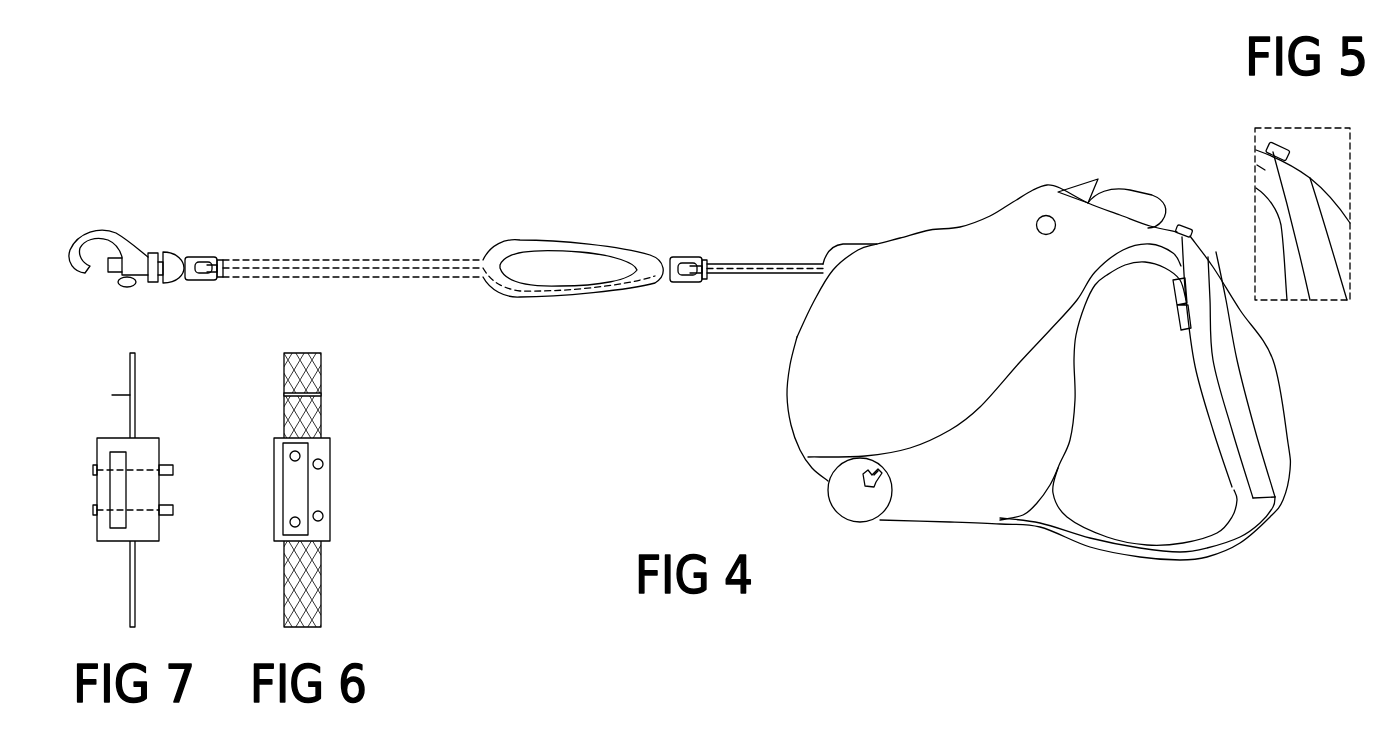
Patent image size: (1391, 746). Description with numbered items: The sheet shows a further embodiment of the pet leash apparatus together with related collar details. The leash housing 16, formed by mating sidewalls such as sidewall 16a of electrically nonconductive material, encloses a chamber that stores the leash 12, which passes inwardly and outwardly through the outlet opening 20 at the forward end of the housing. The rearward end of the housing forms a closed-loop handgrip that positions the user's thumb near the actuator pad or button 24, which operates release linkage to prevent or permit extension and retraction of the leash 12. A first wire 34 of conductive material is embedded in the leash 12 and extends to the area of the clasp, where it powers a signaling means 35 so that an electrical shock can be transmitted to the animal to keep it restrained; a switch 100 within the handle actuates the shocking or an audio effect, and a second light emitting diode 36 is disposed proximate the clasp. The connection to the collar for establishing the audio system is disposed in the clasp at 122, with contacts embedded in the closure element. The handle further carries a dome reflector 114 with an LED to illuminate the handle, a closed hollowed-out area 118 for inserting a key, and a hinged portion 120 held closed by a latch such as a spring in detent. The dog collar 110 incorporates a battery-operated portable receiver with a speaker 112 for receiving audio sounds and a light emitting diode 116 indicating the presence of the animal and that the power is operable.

In FIG. 4, the leash 12 is at (747, 275).
In FIG. 4, the leash housing 16 is at (750, 363).
In FIG. 4, the mating sidewall 16a is at (828, 412).
In FIG. 4, the outlet opening 20 is at (840, 244).
In FIG. 4, the actuator pad or button 24 is at (1086, 190).
In FIG. 4, the first wire 34 is at (757, 264).
In FIG. 4, the signaling means 35 is at (130, 287).
In FIG. 4, the second light emitting diode 36 is at (203, 262).
In FIG. 4, the switch 100 is at (1152, 306).
In FIG. 6, the dog collar 110 is at (322, 410).
In FIG. 6, the speaker 112 is at (302, 489).
In FIG. 7, the speaker 112 is at (150, 445).
In FIG. 4, the dome reflector 114 is at (859, 522).
In FIG. 7, the light emitting diode 116 is at (93, 510).
In FIG. 4, the closed hollowed-out area 118 is at (1312, 298).
In FIG. 5, the closed hollowed-out area 118 is at (1310, 226).
In FIG. 4, the hinged portion 120 is at (1310, 178).
In FIG. 5, the hinged portion 120 is at (1303, 221).
In FIG. 4, the connection in the clasp 122 is at (97, 230).